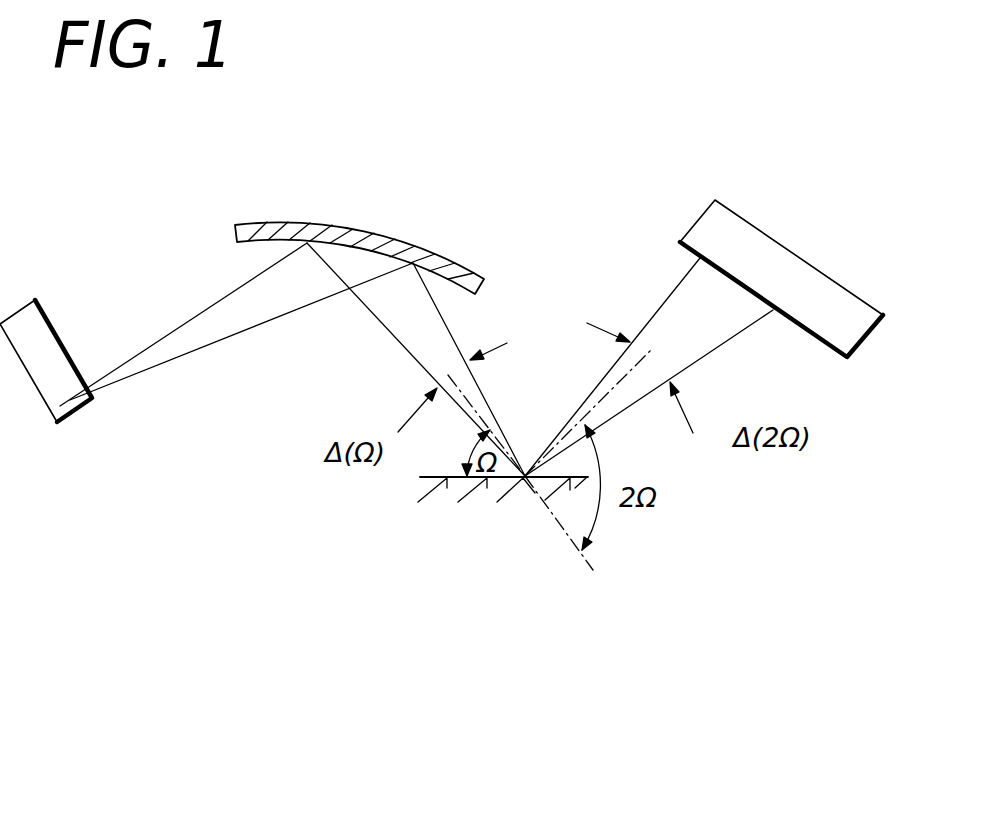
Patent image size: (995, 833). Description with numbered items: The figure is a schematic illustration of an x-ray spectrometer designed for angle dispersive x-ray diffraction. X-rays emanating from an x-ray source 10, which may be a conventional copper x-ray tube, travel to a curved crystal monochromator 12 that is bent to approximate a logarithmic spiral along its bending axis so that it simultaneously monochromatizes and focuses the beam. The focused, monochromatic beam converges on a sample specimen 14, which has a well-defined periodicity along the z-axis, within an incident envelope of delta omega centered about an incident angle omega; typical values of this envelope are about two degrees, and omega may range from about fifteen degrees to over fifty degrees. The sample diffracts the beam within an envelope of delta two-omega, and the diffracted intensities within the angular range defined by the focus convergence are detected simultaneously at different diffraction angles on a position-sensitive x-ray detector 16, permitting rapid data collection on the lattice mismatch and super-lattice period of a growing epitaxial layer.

The x-ray source 10 is at (80, 413).
The curved crystal monochromator 12 is at (380, 230).
The sample specimen 14 is at (523, 482).
The position-sensitive x-ray detector 16 is at (798, 255).